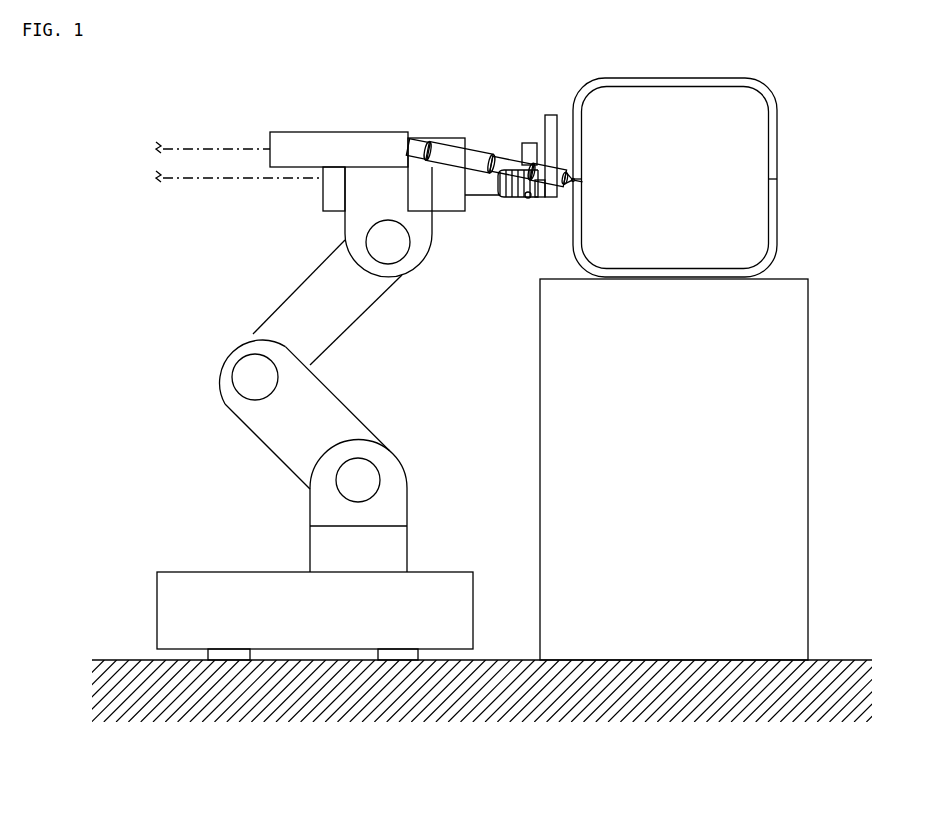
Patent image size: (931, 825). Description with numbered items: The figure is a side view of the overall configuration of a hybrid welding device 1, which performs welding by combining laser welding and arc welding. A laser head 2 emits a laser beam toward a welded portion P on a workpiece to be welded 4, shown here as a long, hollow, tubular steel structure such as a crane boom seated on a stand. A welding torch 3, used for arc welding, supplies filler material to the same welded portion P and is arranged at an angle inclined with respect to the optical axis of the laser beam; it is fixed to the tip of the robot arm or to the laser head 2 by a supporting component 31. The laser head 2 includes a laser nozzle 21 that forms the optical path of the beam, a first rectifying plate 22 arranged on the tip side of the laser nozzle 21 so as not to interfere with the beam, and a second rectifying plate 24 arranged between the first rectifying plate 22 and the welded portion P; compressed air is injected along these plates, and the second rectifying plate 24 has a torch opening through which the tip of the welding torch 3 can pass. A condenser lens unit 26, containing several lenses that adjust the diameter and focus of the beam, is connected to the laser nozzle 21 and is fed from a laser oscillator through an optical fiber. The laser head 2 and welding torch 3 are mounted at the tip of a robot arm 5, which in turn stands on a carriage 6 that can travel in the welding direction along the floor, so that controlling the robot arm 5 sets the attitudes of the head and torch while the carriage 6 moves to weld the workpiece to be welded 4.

The hybrid welding device 1 is at (290, 102).
The laser head 2 is at (504, 141).
The welding torch 3 is at (512, 197).
The workpiece to be welded 4 is at (669, 79).
The robot arm 5 is at (268, 298).
The carriage 6 is at (215, 572).
The laser nozzle 21 is at (482, 201).
The first rectifying plate 22 is at (527, 142).
The second rectifying plate 24 is at (550, 114).
The condenser lens unit 26 is at (323, 197).
The supporting component 31 is at (351, 136).
The welded portion P is at (573, 183).